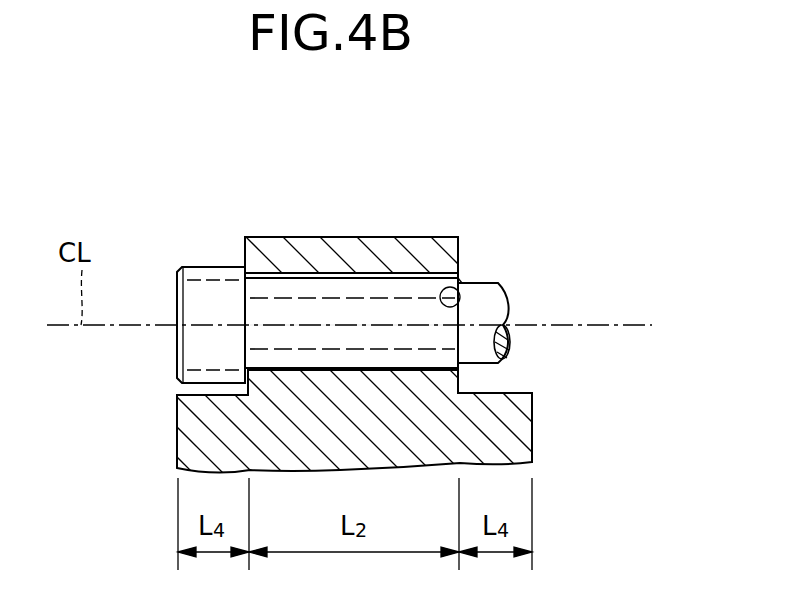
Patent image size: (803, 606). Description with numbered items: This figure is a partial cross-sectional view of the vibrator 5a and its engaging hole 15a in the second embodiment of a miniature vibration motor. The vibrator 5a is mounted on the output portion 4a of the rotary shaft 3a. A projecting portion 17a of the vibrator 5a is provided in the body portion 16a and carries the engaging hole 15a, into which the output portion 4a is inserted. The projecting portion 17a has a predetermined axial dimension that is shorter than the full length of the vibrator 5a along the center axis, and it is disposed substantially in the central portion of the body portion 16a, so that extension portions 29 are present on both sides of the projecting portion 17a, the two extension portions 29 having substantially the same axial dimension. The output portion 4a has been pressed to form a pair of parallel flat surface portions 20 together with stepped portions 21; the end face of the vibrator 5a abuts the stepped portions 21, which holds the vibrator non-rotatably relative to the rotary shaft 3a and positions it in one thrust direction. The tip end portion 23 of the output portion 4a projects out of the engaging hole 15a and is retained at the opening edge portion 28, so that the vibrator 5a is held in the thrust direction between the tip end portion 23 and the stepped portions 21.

The rotary shaft 3a is at (505, 275).
The output portion 4a is at (356, 292).
The vibrator 5a is at (548, 403).
The engaging hole 15a is at (276, 282).
The body portion 16a is at (532, 437).
The projecting portion 17a is at (401, 237).
The flat surface portions 20 is at (362, 340).
The stepped portions 21 is at (460, 281).
The tip end portion 23 is at (205, 266).
The opening edge portion 28 is at (241, 278).
The extension portions 29 is at (180, 393).